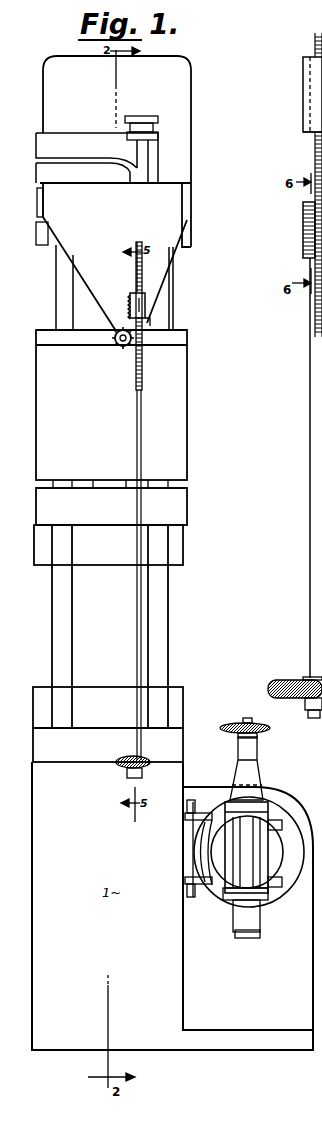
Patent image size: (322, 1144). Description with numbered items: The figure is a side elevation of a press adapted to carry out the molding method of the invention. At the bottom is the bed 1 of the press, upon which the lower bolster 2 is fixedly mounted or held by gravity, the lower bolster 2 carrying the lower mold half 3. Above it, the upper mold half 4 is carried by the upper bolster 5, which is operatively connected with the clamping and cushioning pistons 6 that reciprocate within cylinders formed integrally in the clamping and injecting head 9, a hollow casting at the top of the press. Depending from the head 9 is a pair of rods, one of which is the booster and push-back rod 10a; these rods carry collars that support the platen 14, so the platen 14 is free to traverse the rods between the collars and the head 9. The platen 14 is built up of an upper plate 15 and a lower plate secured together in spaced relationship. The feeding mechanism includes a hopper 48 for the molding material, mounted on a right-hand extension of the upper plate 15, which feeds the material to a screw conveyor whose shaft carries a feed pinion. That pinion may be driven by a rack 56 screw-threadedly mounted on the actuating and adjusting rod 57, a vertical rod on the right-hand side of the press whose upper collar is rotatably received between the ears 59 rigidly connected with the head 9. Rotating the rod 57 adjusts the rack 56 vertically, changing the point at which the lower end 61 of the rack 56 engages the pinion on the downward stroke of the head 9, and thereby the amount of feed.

The bed 1 is at (172, 884).
The lower bolster 2 is at (177, 752).
The lower mold half 3 is at (180, 703).
The upper mold half 4 is at (180, 547).
The upper bolster 5 is at (182, 512).
The clamping and cushioning pistons 6 is at (52, 605).
The clamping and injecting head 9 is at (188, 108).
The booster and push-back rod 10a is at (55, 303).
The platen 14 is at (188, 368).
The upper plate 15 is at (188, 333).
The hopper 48 is at (113, 257).
The rack 56 is at (130, 304).
The actuating and adjusting rod 57 is at (143, 418).
The ears 59 is at (118, 345).
The lower end of the rack 61 is at (146, 324).